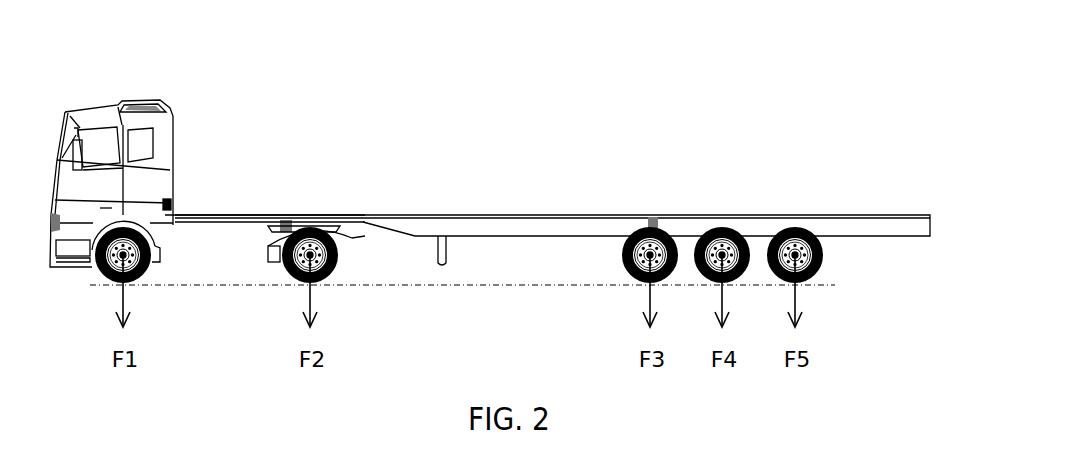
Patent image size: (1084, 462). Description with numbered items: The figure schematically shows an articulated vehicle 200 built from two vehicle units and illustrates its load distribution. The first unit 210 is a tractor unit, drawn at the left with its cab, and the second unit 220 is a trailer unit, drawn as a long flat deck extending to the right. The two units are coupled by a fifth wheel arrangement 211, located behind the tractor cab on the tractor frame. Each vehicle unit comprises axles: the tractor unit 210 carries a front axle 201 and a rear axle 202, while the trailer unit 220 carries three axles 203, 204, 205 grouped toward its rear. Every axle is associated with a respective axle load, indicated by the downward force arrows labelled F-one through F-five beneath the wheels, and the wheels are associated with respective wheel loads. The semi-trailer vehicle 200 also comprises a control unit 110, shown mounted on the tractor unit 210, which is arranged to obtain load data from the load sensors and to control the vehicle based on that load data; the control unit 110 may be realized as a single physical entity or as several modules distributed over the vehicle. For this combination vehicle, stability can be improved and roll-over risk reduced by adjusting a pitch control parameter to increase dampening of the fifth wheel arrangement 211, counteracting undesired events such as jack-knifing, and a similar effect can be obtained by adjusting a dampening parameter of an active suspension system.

The articulated vehicle 200 is at (766, 62).
The first unit 210 is at (160, 110).
The control unit 110 is at (168, 205).
The axle 201 is at (130, 255).
The fifth wheel arrangement 211 is at (288, 222).
The axle 202 is at (316, 255).
The second unit 220 is at (427, 222).
The axle 203 is at (640, 250).
The axle 204 is at (722, 256).
The axle 205 is at (795, 255).